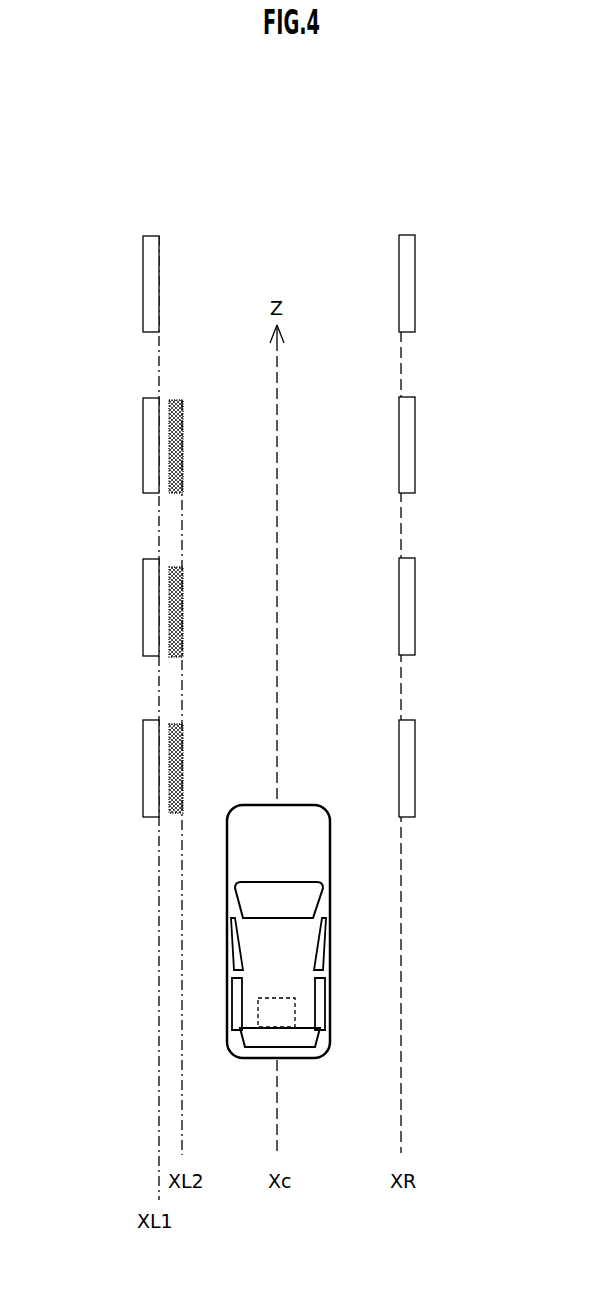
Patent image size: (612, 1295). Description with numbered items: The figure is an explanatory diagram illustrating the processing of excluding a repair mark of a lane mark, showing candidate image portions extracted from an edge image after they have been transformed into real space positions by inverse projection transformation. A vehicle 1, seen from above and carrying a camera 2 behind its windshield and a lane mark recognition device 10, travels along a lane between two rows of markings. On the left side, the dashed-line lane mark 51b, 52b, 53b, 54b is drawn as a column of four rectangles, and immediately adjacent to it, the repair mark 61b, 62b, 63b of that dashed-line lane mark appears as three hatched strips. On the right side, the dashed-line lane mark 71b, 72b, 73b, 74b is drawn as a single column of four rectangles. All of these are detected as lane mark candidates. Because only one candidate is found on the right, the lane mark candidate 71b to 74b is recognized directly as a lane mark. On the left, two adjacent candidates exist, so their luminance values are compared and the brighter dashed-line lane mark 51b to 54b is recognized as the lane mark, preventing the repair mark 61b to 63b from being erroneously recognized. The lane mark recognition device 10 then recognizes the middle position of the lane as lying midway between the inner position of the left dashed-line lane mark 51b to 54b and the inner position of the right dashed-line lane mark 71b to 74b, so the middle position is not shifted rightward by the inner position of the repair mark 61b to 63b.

The vehicle 1 is at (295, 978).
The camera 2 is at (280, 913).
The lane mark recognition device 10 is at (298, 1008).
The dashed-line lane mark 51b is at (148, 768).
The dashed-line lane mark 52b is at (152, 577).
The dashed-line lane mark 53b is at (143, 452).
The dashed-line lane mark 54b is at (145, 277).
The repair mark 61b is at (180, 760).
The repair mark 62b is at (180, 607).
The repair mark 63b is at (178, 443).
The dashed-line lane mark 71b is at (405, 770).
The dashed-line lane mark 72b is at (405, 612).
The dashed-line lane mark 73b is at (405, 450).
The dashed-line lane mark 74b is at (405, 290).